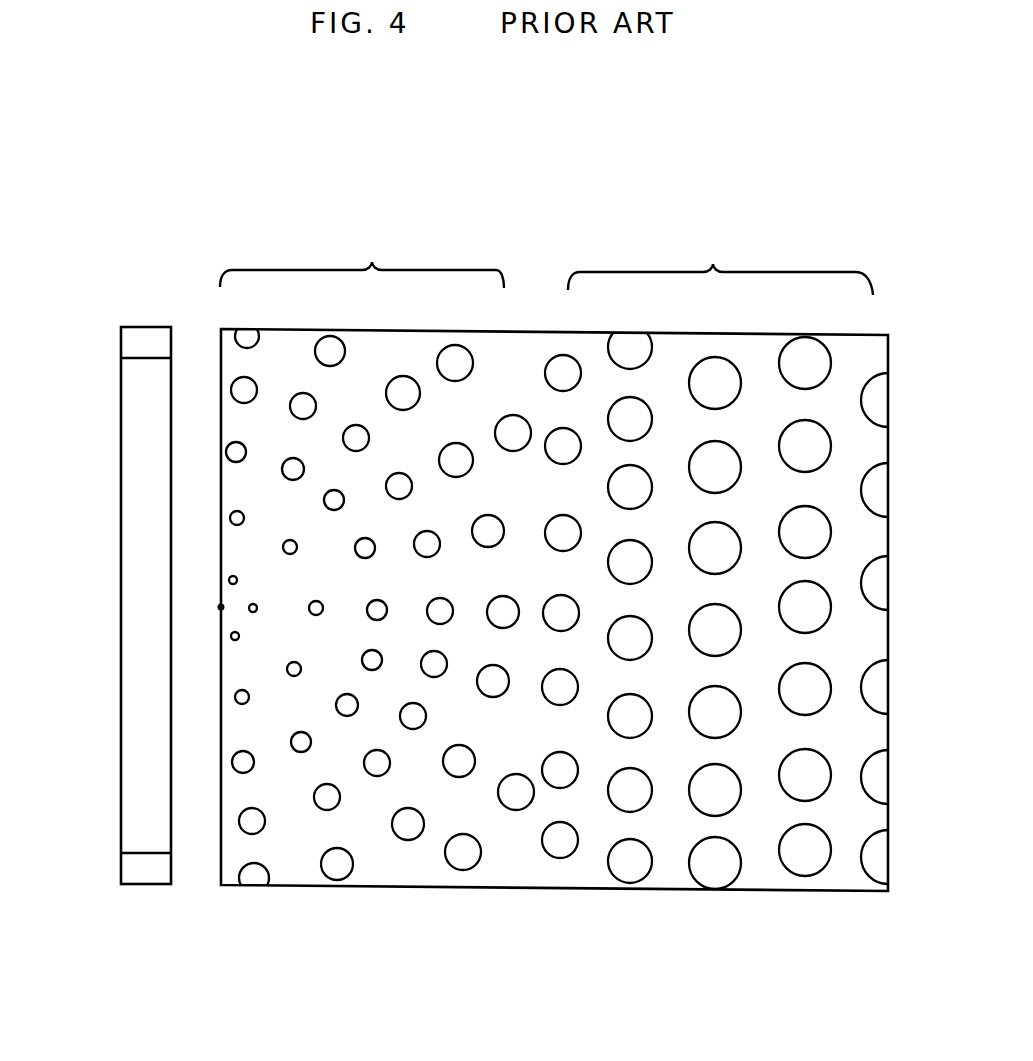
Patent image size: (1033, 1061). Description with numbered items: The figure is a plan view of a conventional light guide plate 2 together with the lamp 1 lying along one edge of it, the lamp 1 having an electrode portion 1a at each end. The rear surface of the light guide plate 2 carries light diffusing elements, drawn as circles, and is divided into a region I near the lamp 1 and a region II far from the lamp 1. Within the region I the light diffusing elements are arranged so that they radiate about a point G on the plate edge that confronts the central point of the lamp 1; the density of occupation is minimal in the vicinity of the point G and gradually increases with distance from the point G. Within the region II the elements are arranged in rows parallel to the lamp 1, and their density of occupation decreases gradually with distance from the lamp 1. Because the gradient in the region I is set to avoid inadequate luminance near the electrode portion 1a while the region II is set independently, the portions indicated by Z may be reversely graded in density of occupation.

The lamp 1 is at (142, 573).
The electrode portion 1a is at (135, 345).
The light guide plate 2 is at (568, 598).
The portions Z is at (513, 353).
The point G is at (221, 607).
The region I is at (372, 246).
The region II is at (709, 236).